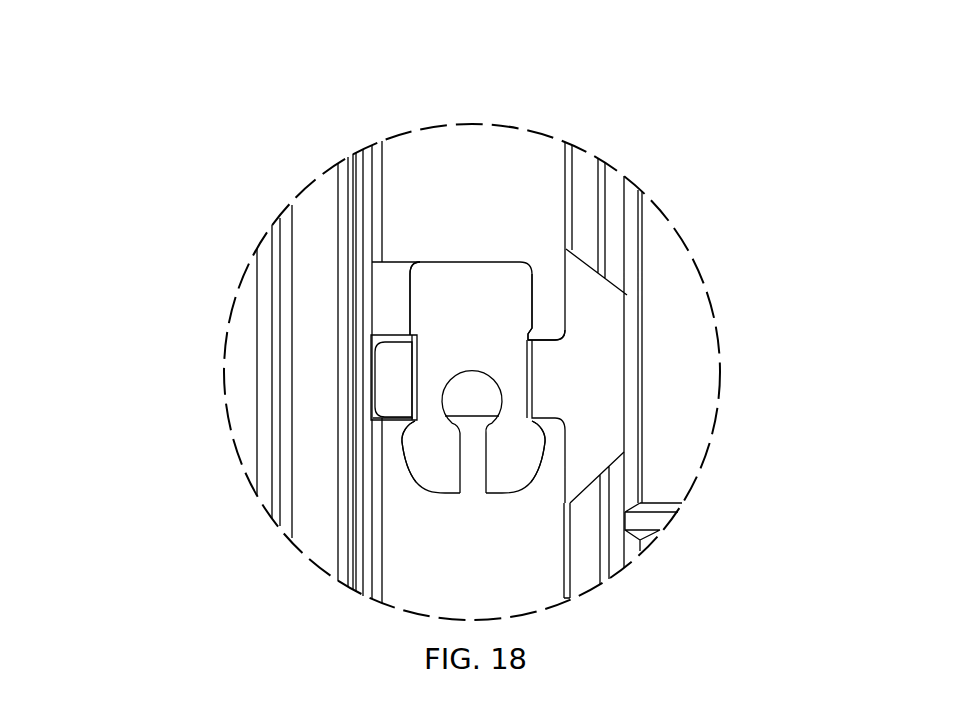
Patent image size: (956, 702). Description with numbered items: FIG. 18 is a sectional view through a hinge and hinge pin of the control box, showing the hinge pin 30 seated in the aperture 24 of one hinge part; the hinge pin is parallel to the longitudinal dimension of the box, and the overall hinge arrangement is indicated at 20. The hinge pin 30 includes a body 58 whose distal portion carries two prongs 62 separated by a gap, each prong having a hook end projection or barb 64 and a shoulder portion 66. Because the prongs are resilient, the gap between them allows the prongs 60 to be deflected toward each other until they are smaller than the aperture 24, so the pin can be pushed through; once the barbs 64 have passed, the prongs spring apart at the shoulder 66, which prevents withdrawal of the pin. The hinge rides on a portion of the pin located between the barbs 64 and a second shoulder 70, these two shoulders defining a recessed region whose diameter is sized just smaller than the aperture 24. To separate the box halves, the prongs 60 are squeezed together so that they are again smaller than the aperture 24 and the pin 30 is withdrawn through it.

The storage assembly 20 is at (612, 112).
The aperture 24 is at (595, 327).
The hinge pin 30 is at (427, 280).
The body 58 is at (486, 327).
The prongs 60 is at (447, 470).
The prongs 62 is at (380, 318).
The hook end projection/barbs 64 is at (533, 432).
The shoulder portion 66 is at (392, 438).
The shoulder 70 is at (407, 337).